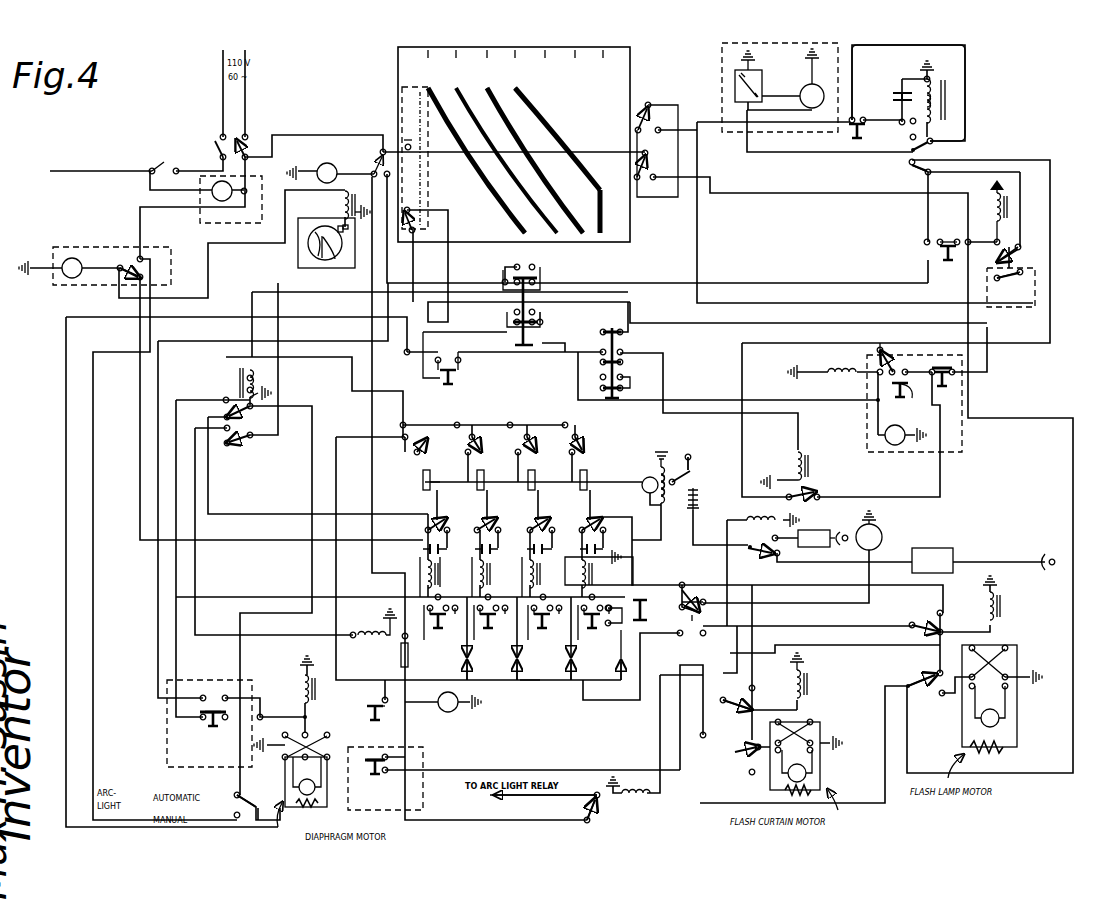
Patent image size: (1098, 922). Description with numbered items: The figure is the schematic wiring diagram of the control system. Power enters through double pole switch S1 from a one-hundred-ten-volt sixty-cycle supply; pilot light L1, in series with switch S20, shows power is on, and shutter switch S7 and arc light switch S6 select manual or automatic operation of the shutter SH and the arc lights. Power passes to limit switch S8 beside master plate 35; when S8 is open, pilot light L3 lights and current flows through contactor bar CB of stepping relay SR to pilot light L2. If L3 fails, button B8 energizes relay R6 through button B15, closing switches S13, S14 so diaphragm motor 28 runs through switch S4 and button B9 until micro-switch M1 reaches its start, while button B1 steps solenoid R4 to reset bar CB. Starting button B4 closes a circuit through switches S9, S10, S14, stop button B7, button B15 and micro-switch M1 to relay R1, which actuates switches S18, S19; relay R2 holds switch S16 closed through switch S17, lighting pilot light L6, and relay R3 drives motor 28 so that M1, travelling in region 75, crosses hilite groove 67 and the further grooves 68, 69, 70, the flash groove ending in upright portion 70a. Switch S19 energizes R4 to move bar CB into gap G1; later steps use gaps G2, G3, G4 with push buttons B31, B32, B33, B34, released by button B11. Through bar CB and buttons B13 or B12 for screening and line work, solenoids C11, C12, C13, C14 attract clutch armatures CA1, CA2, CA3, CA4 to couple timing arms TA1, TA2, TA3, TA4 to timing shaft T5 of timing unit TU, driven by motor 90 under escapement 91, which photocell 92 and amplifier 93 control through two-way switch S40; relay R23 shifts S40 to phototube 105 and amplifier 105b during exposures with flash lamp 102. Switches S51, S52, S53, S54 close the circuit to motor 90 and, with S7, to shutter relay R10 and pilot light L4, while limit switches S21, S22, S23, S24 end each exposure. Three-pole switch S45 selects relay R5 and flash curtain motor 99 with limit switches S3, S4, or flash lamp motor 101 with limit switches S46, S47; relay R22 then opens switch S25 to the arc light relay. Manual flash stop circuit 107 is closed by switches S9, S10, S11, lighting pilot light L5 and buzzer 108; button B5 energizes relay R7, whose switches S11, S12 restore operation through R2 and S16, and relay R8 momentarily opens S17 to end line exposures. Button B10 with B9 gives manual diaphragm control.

The double pole switch S1 is at (218, 148).
The switch S20 is at (158, 162).
The pilot light L1 is at (215, 196).
The pilot light L3 is at (322, 162).
The limit switch S8 is at (380, 153).
The shutter-operating relay R10 is at (340, 201).
The shutter SH is at (297, 268).
The pilot light L4 is at (72, 257).
The shutter switch S7 is at (128, 263).
The master plate 35 is at (396, 56).
The selector contact 75 is at (402, 140).
The hilite groove 67 is at (496, 175).
The scale curve 68 is at (540, 135).
The scale curve 69 is at (520, 103).
The scale curve 70 is at (532, 122).
The lower upright portion of flash groove 70a is at (602, 218).
The micro-switch M1 is at (417, 216).
The limit switch S10 is at (656, 140).
The limit switch S9 is at (527, 165).
The manual flash stop circuit 107 is at (722, 74).
The buzzer 108 is at (735, 86).
The pilot light L5 is at (799, 78).
The relay R7 is at (945, 101).
The button B5 is at (856, 142).
The switch S11 is at (932, 144).
The switch S12 is at (918, 172).
The relay R6 is at (1013, 214).
The button B8 is at (952, 240).
The switch S13 is at (1023, 252).
The switch S14 is at (1011, 287).
The manual button B15 is at (528, 285).
The relay R1 is at (258, 378).
The switch S18 is at (243, 420).
The switch S19 is at (240, 446).
The line button B12 is at (458, 368).
The screening button B13 is at (612, 395).
The limit switch S21 is at (414, 447).
The limit switch S22 is at (482, 439).
The limit switch S23 is at (534, 439).
The limit switch S24 is at (579, 437).
The timing arm TA1 is at (422, 486).
The timing shaft T5 is at (432, 482).
The timing arm TA2 is at (484, 482).
The timing arm TA3 is at (535, 482).
The timing arm TA4 is at (587, 482).
The timing unit motor 90 is at (646, 478).
The timing unit TU is at (672, 455).
The escapement mechanism 91 is at (692, 466).
The switch S51 is at (432, 519).
The switch S52 is at (484, 520).
The switch S53 is at (538, 520).
The switch S54 is at (590, 520).
The clutch armature CA1 is at (428, 549).
The clutch armature CA2 is at (501, 548).
The clutch armature CA3 is at (554, 548).
The clutch armature CA4 is at (612, 552).
The solenoid C11 is at (420, 570).
The solenoid C12 is at (494, 577).
The solenoid C13 is at (545, 577).
The solenoid C14 is at (602, 574).
The switch S16 is at (890, 352).
The relay R2 is at (822, 380).
The stop button B7 is at (955, 378).
The starting button B4 is at (914, 403).
The pilot light L6 is at (897, 446).
The relay R8 is at (812, 463).
The switch S17 is at (808, 495).
The relay R23 is at (770, 518).
The amplifier 105b is at (825, 527).
The phototube 105 is at (840, 545).
The flash lamp 102 is at (881, 535).
The amplifying unit 93 is at (940, 548).
The photoelectric cell 92 is at (1045, 552).
The two-way switch S40 is at (762, 558).
The three-pole switch S45 is at (688, 598).
The release button B11 is at (640, 613).
The limit switch S46 is at (918, 620).
The solenoid R4 is at (366, 632).
The push button B31 is at (439, 625).
The push button B32 is at (491, 625).
The push button B33 is at (545, 625).
The push button B34 is at (595, 625).
The gap G1 is at (477, 638).
The gap G2 is at (528, 638).
The gap G3 is at (589, 638).
The gap G4 is at (625, 660).
The contactor bar CB is at (408, 660).
The stepping relay SR is at (528, 680).
The pilot light L2 is at (450, 712).
The button B1 is at (383, 704).
The button B10 is at (213, 690).
The relay R3 is at (300, 680).
The diaphragm motor 28 is at (338, 727).
The arc light switch S6 is at (245, 805).
The button B9 is at (385, 778).
The switch S25 is at (587, 810).
The relay R22 is at (635, 797).
The upper limit switch S3 is at (723, 700).
The lower limit switch S4 is at (730, 752).
The relay R5 is at (808, 680).
The flash curtain motor 99 is at (817, 725).
The limit switch S47 is at (926, 675).
The flash lamp motor 101 is at (1017, 643).